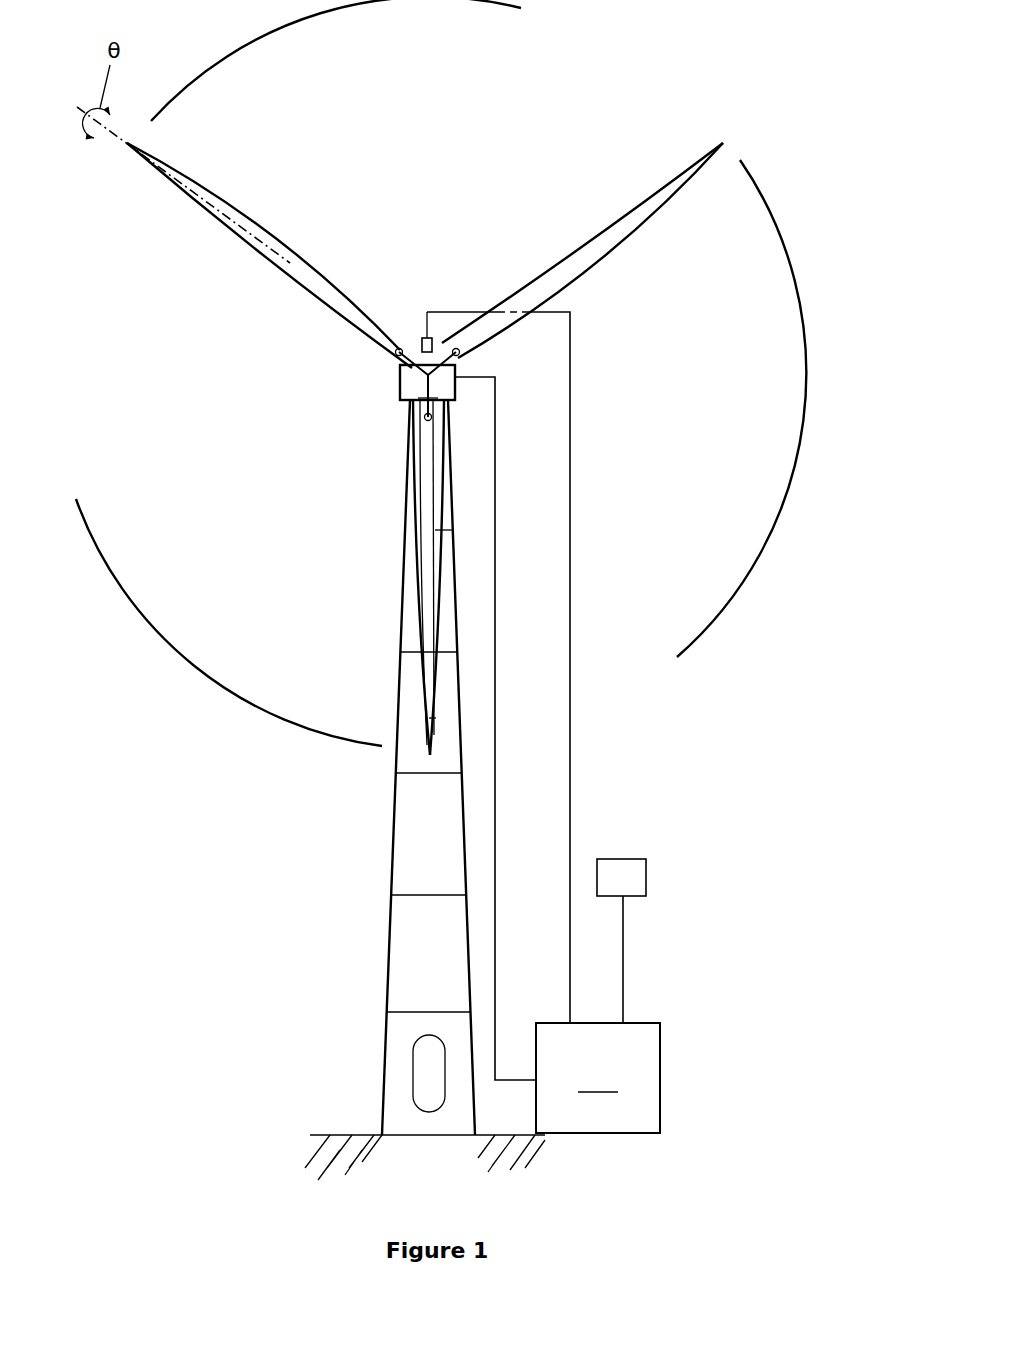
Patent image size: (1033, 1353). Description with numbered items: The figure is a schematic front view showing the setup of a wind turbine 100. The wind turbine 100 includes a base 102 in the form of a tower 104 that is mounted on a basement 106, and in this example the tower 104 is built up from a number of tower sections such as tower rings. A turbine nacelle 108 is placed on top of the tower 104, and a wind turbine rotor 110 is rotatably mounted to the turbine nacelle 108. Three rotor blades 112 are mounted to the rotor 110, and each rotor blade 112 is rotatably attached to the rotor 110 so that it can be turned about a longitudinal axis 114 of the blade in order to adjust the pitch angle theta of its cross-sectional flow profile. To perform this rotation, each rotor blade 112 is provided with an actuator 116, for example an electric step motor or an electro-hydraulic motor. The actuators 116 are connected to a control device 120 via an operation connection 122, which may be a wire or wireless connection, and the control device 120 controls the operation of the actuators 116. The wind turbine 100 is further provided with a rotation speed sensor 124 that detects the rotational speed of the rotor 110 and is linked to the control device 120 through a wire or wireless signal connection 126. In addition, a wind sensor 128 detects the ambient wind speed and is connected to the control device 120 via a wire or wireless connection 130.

The wind turbine 100 is at (356, 921).
The base 102 is at (388, 833).
The tower 104 is at (448, 832).
The basement 106 is at (325, 1135).
The turbine nacelle 108 is at (447, 386).
The wind turbine rotor 110 is at (402, 396).
The rotor blade 112 is at (427, 617).
The longitudinal axis 114 is at (241, 227).
The actuator 116 is at (404, 349).
The control device 120 is at (598, 1078).
The operation connection 122 is at (496, 545).
The rotation speed sensor 124 is at (442, 348).
The signal connection 126 is at (570, 732).
The wind sensor 128 is at (635, 877).
The connection 130 is at (623, 968).